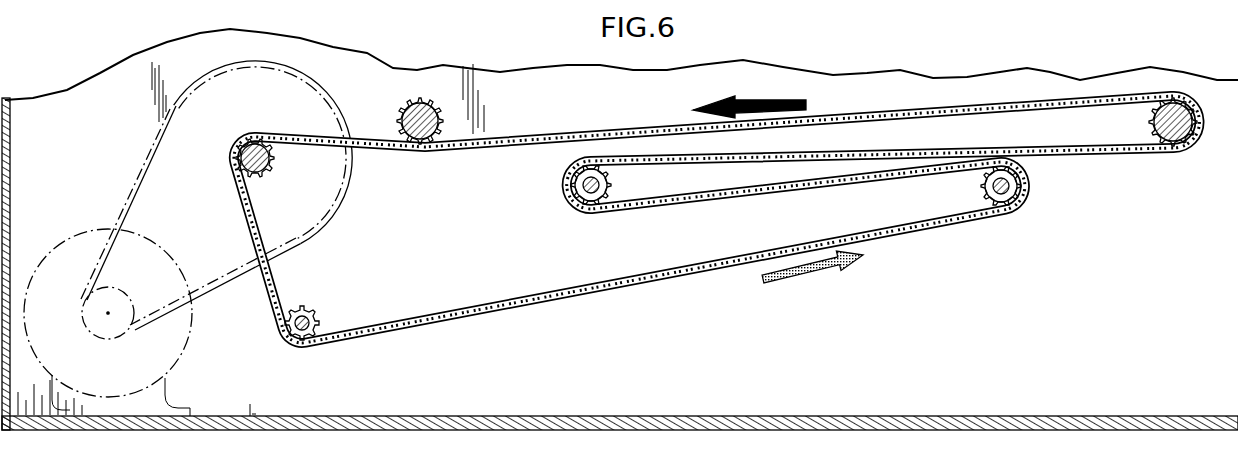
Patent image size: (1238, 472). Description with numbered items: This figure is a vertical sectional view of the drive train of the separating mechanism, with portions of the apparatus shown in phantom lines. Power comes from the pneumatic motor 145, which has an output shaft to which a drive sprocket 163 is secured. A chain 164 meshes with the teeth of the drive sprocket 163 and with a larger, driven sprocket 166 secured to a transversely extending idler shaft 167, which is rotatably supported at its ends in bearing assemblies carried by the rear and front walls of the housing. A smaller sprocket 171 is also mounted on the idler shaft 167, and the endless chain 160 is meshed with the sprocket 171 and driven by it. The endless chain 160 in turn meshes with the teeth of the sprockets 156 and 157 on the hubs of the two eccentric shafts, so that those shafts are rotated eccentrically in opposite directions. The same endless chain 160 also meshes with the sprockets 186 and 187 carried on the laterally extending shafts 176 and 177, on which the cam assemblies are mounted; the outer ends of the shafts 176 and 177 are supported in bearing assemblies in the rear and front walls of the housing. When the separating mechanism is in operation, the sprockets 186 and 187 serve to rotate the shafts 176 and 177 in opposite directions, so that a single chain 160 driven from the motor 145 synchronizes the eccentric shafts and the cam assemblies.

The pneumatic motor 145 is at (69, 237).
The sprocket 156 is at (444, 112).
The sprocket 157 is at (1158, 149).
The endless chain 160 is at (612, 291).
The drive sprocket 163 is at (101, 339).
The chain 164 is at (147, 166).
The driven sprocket 166 is at (349, 188).
The idler shaft 167 is at (252, 136).
The smaller sprocket 171 is at (272, 176).
The shaft 176 is at (586, 196).
The shaft 177 is at (1010, 186).
The sprocket 186 is at (616, 195).
The sprocket 187 is at (981, 190).